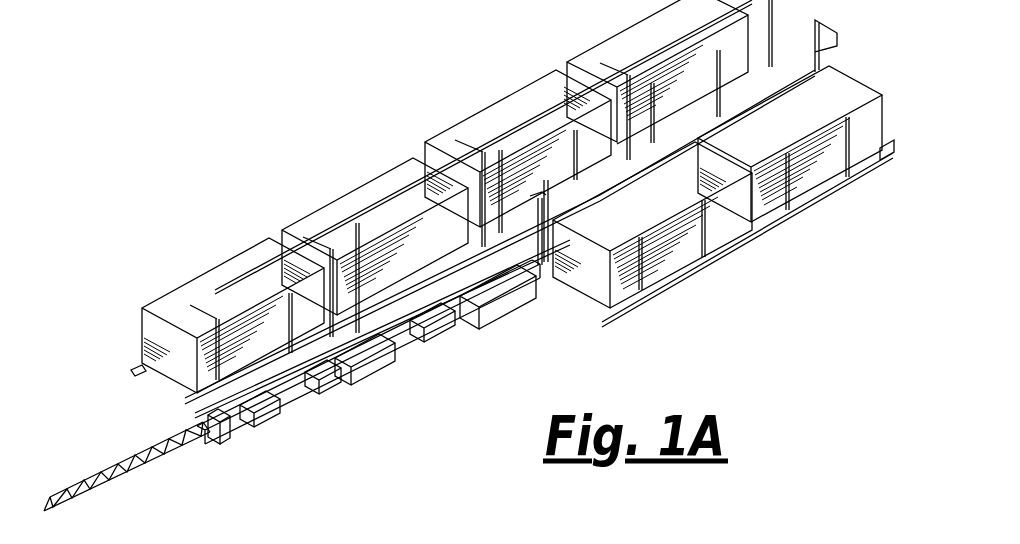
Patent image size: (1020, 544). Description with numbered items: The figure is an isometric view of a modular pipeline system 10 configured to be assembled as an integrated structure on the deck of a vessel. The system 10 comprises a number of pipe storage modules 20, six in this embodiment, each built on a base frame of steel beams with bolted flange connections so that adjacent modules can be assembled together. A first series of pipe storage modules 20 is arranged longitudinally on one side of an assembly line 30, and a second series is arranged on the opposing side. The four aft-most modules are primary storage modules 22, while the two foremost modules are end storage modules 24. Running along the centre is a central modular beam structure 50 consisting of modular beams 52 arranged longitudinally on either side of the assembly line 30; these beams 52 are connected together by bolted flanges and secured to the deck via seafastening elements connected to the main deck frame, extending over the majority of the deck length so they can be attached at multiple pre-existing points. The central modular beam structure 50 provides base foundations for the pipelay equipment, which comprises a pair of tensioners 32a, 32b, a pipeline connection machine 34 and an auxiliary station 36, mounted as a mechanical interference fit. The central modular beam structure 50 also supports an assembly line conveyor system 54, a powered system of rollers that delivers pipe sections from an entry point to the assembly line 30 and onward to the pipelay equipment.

The modular pipeline system 10 is at (197, 108).
The pipe storage module 20 is at (247, 263).
The primary storage module 22 is at (202, 288).
The end storage module 24 is at (623, 43).
The assembly line 30 is at (242, 427).
The tensioner 32a is at (440, 313).
The tensioner 32b is at (293, 402).
The pipeline connection machine 34 is at (502, 293).
The auxiliary station 36 is at (358, 363).
The central modular beam structure 50 is at (257, 427).
The modular beam 52 is at (415, 340).
The assembly line conveyor system 54 is at (540, 297).